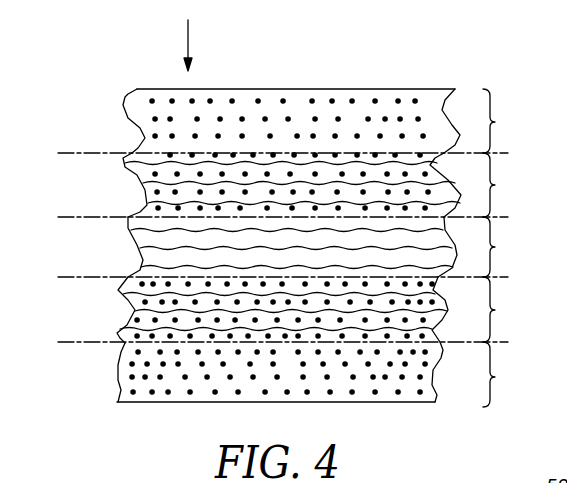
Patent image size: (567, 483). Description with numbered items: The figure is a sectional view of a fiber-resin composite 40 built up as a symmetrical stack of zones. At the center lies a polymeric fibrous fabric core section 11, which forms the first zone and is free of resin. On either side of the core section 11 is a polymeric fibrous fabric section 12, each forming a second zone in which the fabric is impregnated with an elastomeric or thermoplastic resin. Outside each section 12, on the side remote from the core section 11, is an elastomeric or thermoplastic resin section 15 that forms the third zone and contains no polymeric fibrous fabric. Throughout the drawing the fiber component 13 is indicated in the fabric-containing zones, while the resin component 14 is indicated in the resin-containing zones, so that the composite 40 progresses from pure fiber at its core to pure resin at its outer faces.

The fiber-resin composite 40 is at (456, 51).
The elastomeric or thermoplastic resin section 15 is at (279, 246).
The polymeric fibrous fabric section 12 is at (290, 248).
The polymeric fibrous fabric core section 11 is at (324, 247).
The resin component 14 is at (150, 99).
The fiber component 13 is at (123, 158).